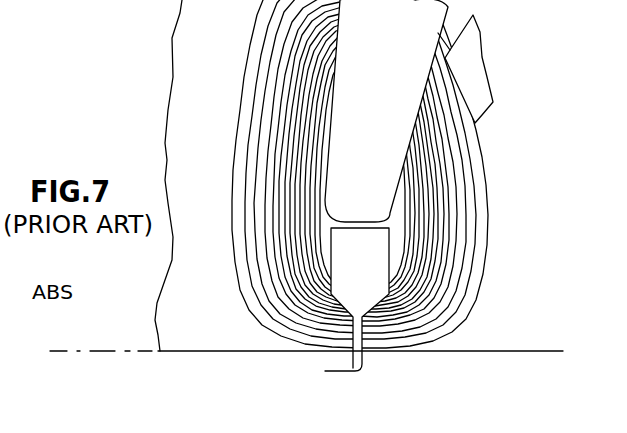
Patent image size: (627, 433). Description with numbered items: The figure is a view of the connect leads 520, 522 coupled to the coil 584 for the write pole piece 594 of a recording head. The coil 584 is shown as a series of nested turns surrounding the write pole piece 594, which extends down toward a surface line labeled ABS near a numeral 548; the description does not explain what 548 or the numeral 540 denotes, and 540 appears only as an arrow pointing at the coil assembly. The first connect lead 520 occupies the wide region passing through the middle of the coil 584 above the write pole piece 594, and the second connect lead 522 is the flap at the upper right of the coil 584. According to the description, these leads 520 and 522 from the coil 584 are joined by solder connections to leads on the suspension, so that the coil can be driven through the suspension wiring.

The connect lead 520 is at (391, 104).
The connect lead 522 is at (483, 62).
The write head 540 is at (403, 185).
The air bearing surface 548 is at (106, 351).
The coil 584 is at (463, 250).
The write pole piece 594 is at (380, 282).